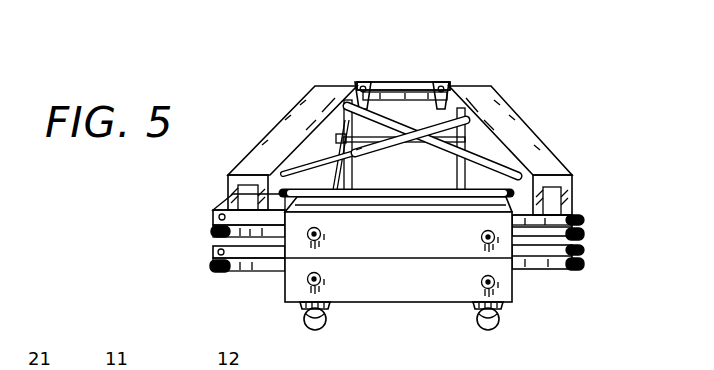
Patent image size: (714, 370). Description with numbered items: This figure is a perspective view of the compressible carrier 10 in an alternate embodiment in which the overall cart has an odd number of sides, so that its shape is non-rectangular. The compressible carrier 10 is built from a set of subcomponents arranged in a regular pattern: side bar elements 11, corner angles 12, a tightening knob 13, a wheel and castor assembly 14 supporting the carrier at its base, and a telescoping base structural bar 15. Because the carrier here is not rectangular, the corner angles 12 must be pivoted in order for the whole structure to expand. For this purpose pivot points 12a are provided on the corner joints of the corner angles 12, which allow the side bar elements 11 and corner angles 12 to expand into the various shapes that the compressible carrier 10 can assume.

The compressible carrier 10 is at (224, 63).
The side bar element 11 is at (514, 132).
The corner angle 12 is at (371, 81).
The pivot point 12a is at (584, 218).
The tightening knob 13 is at (309, 239).
The wheel and castor assembly 14 is at (322, 330).
The telescoping base structural bar 15 is at (431, 124).